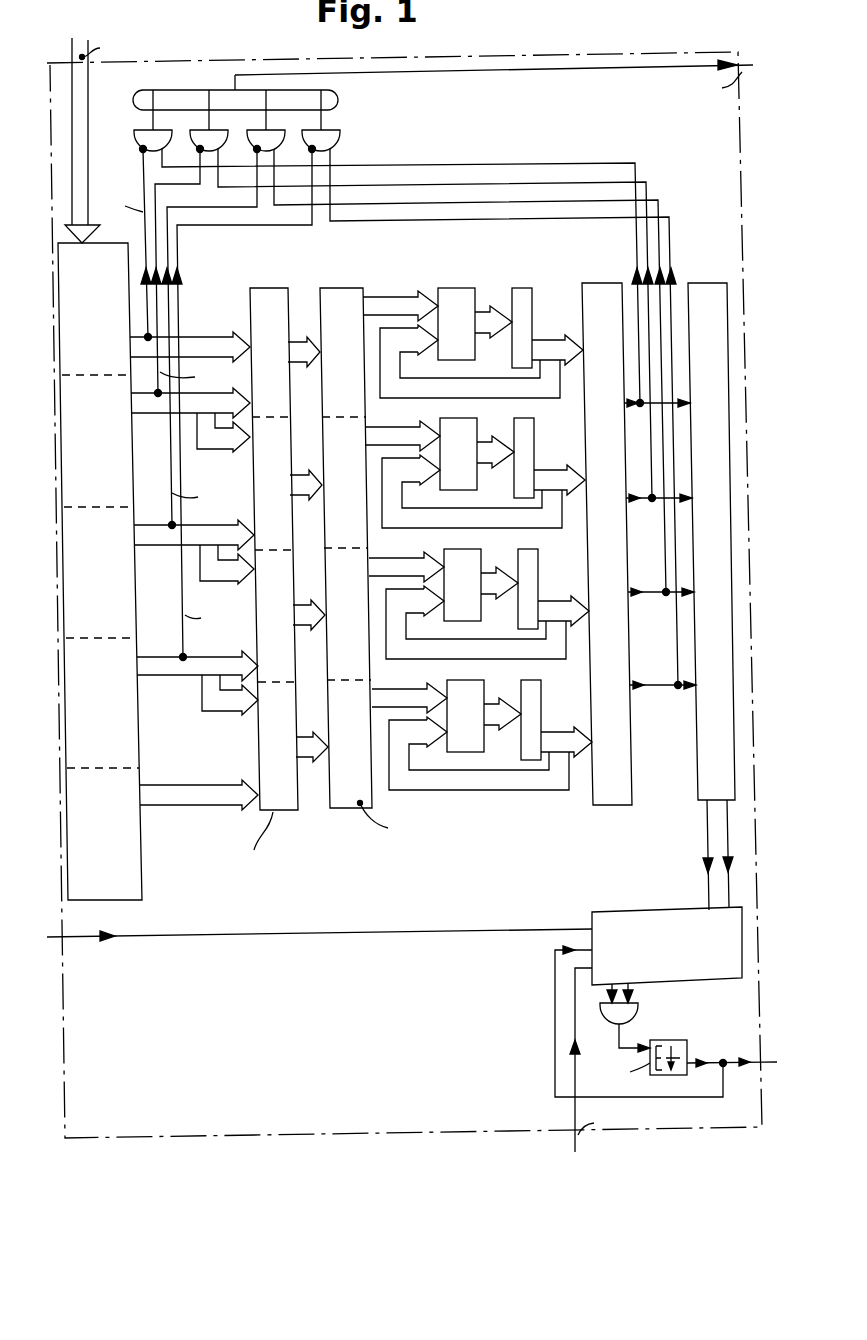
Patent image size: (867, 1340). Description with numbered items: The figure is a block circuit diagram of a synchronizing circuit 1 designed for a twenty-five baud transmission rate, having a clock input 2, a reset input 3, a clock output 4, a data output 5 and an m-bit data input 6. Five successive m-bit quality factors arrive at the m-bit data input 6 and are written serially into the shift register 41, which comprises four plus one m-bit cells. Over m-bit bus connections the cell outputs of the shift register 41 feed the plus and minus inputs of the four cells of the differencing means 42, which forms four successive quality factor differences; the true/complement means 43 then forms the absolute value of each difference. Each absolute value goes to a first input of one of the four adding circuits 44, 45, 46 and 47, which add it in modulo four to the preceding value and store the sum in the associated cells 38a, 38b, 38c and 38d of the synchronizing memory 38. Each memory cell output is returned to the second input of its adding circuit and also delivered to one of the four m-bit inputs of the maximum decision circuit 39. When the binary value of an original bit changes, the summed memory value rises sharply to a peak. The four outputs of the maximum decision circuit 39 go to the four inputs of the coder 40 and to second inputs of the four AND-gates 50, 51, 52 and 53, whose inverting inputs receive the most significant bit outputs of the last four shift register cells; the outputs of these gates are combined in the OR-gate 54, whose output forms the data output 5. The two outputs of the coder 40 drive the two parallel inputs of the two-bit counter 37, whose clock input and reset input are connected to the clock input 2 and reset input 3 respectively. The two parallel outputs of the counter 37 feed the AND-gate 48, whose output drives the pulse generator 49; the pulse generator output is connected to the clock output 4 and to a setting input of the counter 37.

The synchronizing circuit 1 is at (370, 1137).
The clock input 2 is at (47, 937).
The reset input 3 is at (578, 1138).
The clock output 4 is at (776, 1062).
The data output 5 is at (752, 66).
The m-bit data input 6 is at (72, 42).
The two-bit counter 37 is at (612, 912).
The synchronizing memory 38 is at (523, 238).
The cell of the synchronizing memory 38a is at (518, 288).
The cell of the synchronizing memory 38b is at (549, 449).
The cell of the synchronizing memory 38c is at (553, 580).
The cell of the synchronizing memory 38d is at (556, 715).
The maximum decision circuit 39 is at (590, 283).
The coder 40 is at (700, 283).
The shift register 41 is at (142, 878).
The differencing means 42 is at (288, 815).
The true/complement means 43 is at (356, 812).
The adding circuit 44 is at (450, 288).
The adding circuit 45 is at (463, 464).
The adding circuit 46 is at (467, 595).
The adding circuit 47 is at (470, 730).
The AND-gate 48 is at (636, 1010).
The pulse generator 49 is at (687, 1048).
The AND-gate 50 is at (143, 131).
The AND-gate 51 is at (199, 131).
The AND-gate 52 is at (254, 131).
The AND-gate 53 is at (314, 131).
The OR-gate 54 is at (338, 95).